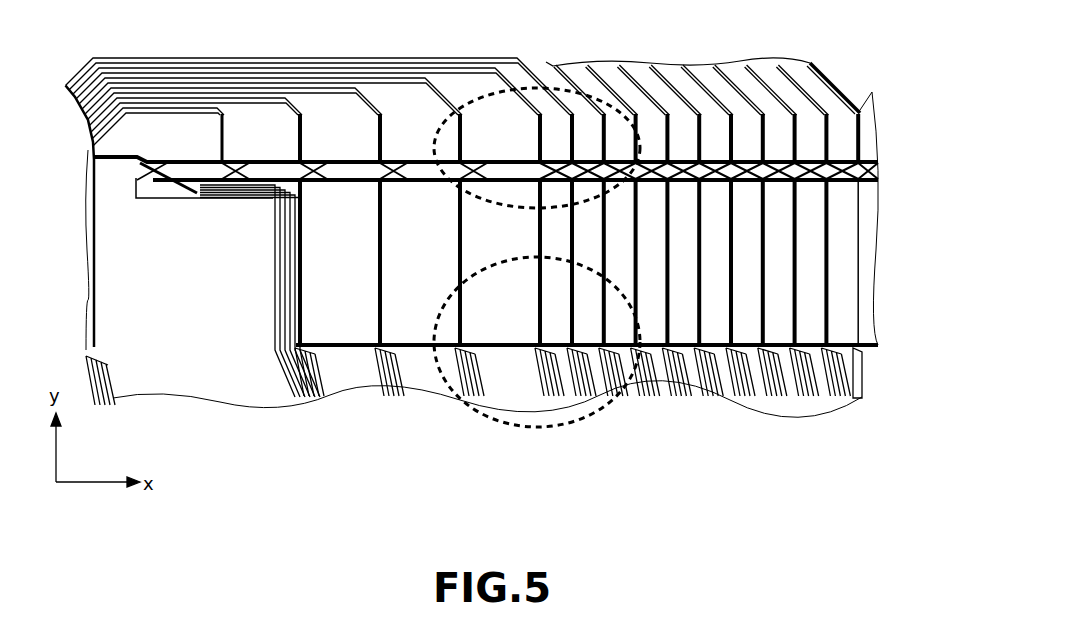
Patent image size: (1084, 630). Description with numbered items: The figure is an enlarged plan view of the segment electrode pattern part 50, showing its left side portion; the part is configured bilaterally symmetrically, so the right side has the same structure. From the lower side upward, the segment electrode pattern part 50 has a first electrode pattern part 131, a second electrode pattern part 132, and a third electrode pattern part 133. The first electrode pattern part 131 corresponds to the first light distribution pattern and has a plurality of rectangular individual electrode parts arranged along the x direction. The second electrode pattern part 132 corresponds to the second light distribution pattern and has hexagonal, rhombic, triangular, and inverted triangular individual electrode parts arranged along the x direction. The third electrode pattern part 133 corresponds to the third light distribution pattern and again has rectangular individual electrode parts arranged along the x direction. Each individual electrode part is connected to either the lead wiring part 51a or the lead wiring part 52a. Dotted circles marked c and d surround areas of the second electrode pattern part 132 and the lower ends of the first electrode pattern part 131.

The segment electrode pattern part 50 is at (490, 533).
The lead wiring part 51a is at (690, 33).
The lead wiring part 52a is at (420, 423).
The first electrode pattern part 131 is at (525, 319).
The second electrode pattern part 132 is at (890, 177).
The third electrode pattern part 133 is at (515, 175).
The region c is at (570, 74).
The region d is at (580, 422).